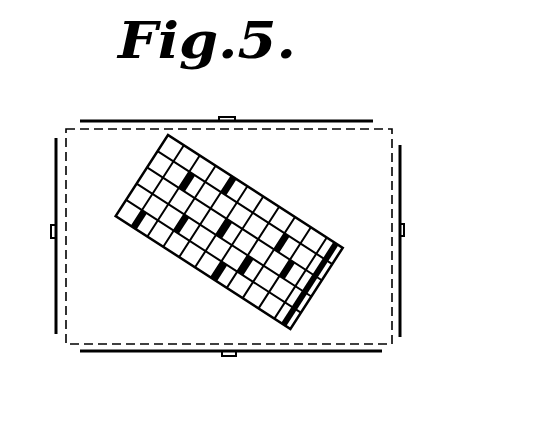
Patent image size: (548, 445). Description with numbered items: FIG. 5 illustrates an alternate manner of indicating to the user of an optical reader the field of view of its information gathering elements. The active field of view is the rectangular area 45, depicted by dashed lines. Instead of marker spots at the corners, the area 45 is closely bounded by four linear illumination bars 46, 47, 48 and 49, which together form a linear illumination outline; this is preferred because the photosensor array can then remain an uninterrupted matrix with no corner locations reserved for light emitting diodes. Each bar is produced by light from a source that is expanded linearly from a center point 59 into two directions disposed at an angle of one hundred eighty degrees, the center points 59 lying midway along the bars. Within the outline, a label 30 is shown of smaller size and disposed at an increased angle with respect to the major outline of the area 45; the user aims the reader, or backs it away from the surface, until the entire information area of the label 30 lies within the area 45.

The label 30 is at (221, 170).
The area 45 is at (281, 140).
The linear illumination bar 46 is at (310, 351).
The linear illumination bar 47 is at (55, 315).
The linear illumination bar 48 is at (96, 121).
The linear illumination bar 49 is at (401, 314).
The center point 59 is at (228, 117).